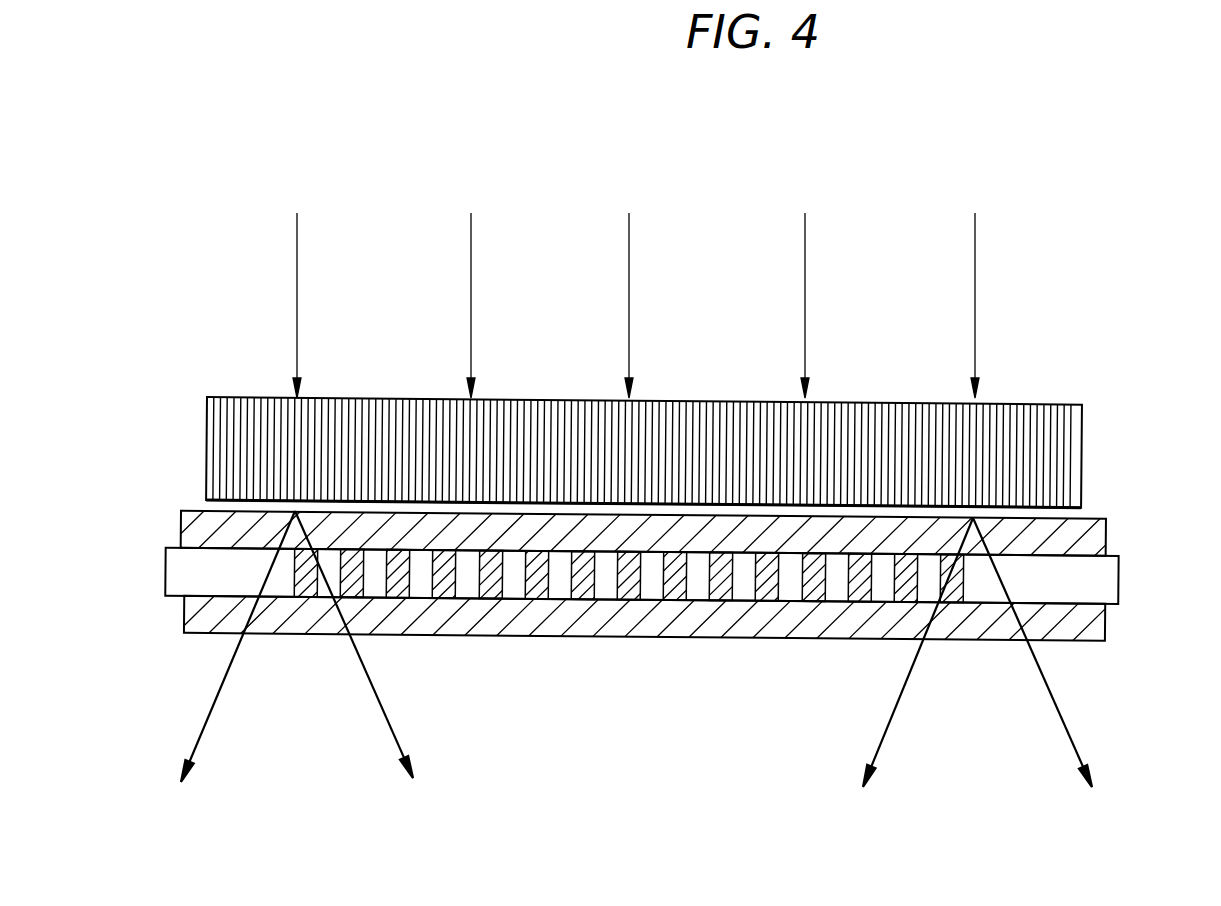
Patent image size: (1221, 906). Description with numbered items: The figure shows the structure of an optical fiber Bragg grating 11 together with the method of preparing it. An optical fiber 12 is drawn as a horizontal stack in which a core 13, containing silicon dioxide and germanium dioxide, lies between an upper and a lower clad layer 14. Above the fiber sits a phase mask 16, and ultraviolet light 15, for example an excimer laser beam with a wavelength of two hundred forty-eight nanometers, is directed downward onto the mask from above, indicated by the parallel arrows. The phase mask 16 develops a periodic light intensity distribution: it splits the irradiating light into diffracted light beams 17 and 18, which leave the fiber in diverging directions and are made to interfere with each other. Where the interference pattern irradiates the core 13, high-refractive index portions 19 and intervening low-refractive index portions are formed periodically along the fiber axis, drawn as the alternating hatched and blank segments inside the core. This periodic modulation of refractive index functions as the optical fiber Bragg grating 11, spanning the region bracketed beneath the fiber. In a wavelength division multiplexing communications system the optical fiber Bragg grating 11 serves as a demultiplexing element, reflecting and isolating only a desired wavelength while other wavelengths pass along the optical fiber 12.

The optical fiber Bragg grating 11 is at (631, 652).
The optical fiber 12 is at (690, 633).
The core 13 is at (1048, 585).
The clad layer 14 is at (1080, 545).
The ultraviolet light 15 is at (636, 289).
The phase mask 16 is at (1025, 423).
The diffracted light beam 17 is at (566, 667).
The diffracted light beam 18 is at (703, 666).
The high-refractive index portion 19 is at (969, 650).